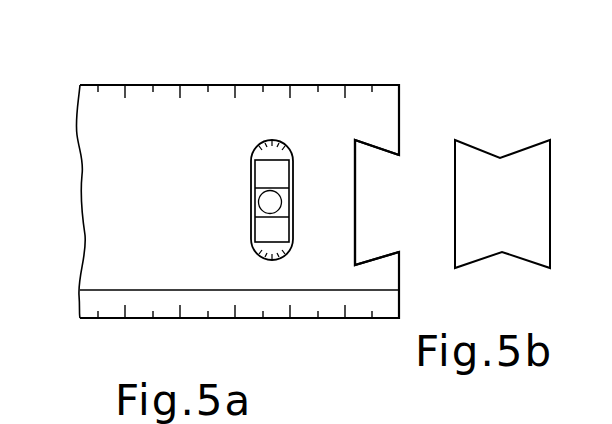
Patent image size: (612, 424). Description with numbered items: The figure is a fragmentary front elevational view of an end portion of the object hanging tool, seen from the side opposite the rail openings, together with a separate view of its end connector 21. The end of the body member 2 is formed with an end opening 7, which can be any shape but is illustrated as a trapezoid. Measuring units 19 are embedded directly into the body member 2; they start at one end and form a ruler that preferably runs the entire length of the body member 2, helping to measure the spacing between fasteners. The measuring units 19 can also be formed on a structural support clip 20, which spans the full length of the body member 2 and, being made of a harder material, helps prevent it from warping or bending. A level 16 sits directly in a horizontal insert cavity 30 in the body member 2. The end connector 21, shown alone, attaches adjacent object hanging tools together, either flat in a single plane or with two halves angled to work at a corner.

In FIG. 5A, the body member 2 is at (98, 147).
In FIG. 5A, the end opening 7 is at (372, 216).
In FIG. 5A, the level 16 is at (262, 226).
In FIG. 5A, the measuring units 19 is at (240, 91).
In FIG. 5A, the structural support clip 20 is at (358, 320).
In FIG. 5B, the end connector 21 is at (500, 140).
In FIG. 5A, the horizontal insert cavity 30 is at (266, 141).